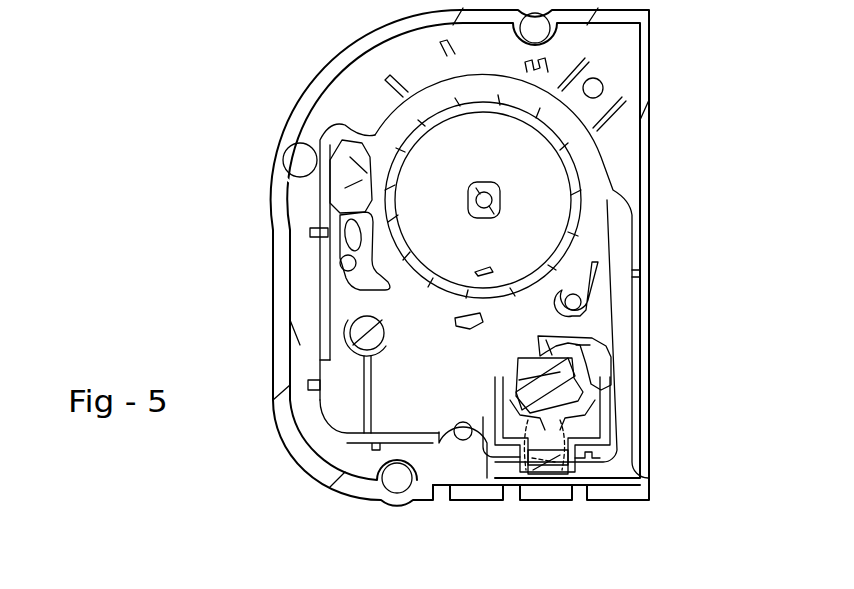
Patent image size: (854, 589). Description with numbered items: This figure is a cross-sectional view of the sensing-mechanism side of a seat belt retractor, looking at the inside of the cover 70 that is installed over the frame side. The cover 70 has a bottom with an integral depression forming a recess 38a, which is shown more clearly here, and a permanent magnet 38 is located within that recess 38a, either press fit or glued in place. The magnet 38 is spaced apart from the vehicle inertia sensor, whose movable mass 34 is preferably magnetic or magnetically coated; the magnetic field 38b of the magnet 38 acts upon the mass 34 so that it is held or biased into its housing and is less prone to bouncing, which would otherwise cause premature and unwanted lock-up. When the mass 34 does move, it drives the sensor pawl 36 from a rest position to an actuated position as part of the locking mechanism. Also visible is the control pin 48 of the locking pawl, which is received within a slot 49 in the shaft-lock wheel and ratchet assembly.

The cover 70 is at (305, 90).
The slot 49 is at (353, 238).
The control pin 48 is at (342, 258).
The sensor pawl 36 is at (540, 346).
The movable mass 34 is at (517, 360).
The permanent magnet 38 is at (547, 464).
The recess 38a is at (572, 476).
The magnetic field 38b is at (520, 465).